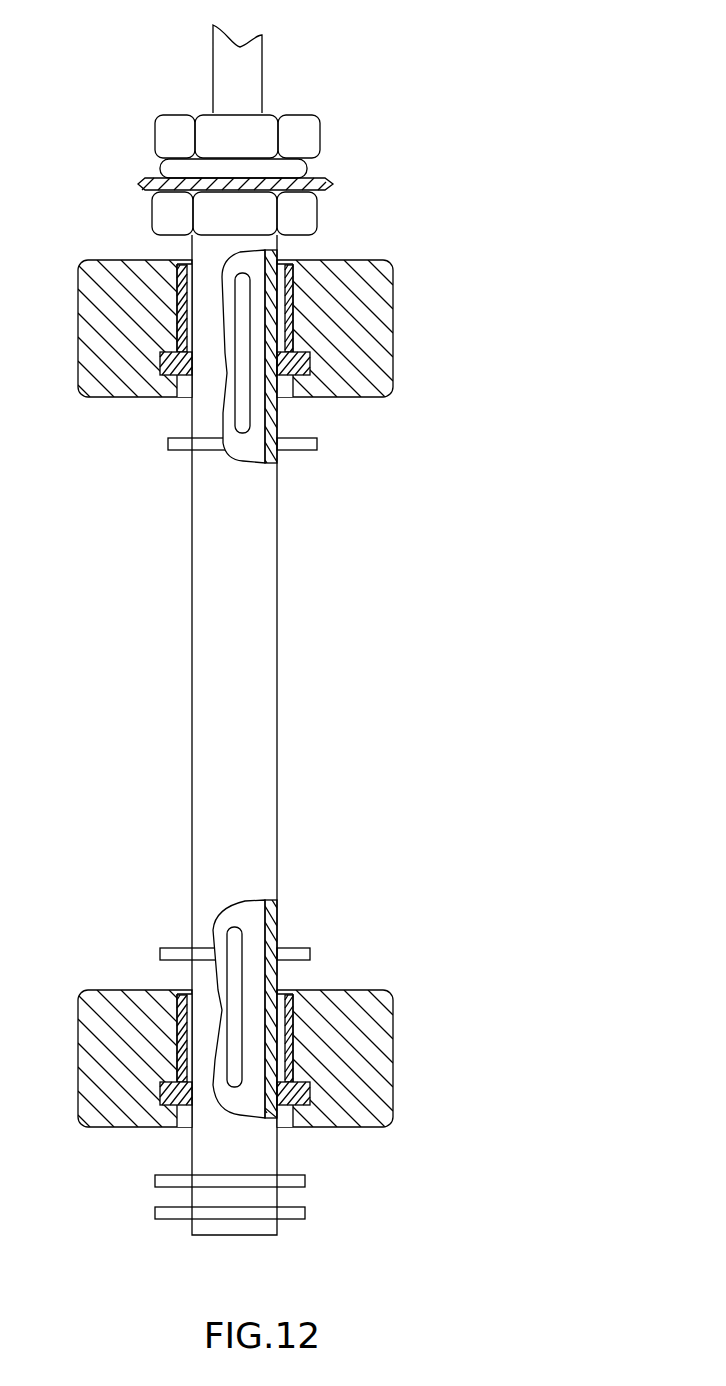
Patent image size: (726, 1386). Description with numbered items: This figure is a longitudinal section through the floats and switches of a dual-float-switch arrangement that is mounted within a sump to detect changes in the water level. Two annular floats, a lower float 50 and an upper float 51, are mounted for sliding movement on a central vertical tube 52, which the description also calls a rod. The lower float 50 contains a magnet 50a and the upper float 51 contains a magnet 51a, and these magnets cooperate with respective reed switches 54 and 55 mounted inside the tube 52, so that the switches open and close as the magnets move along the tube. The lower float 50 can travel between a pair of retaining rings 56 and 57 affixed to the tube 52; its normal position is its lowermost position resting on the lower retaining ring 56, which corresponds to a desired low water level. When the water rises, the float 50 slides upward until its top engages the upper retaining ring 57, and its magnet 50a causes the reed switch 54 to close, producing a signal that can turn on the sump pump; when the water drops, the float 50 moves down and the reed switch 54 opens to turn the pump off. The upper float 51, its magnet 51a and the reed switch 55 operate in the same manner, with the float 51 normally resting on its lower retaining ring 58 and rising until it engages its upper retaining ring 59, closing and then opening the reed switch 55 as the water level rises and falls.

The lower float 50 is at (380, 998).
The magnet 50a is at (307, 1092).
The upper float 51 is at (377, 275).
The magnet 51a is at (307, 367).
The central vertical tube 52 is at (267, 740).
The reed switch 54 is at (237, 937).
The reed switch 55 is at (243, 420).
The lower retaining ring 56 is at (298, 1182).
The upper retaining ring 57 is at (173, 955).
The lower retaining ring 58 is at (180, 447).
The upper retaining ring 59 is at (160, 213).